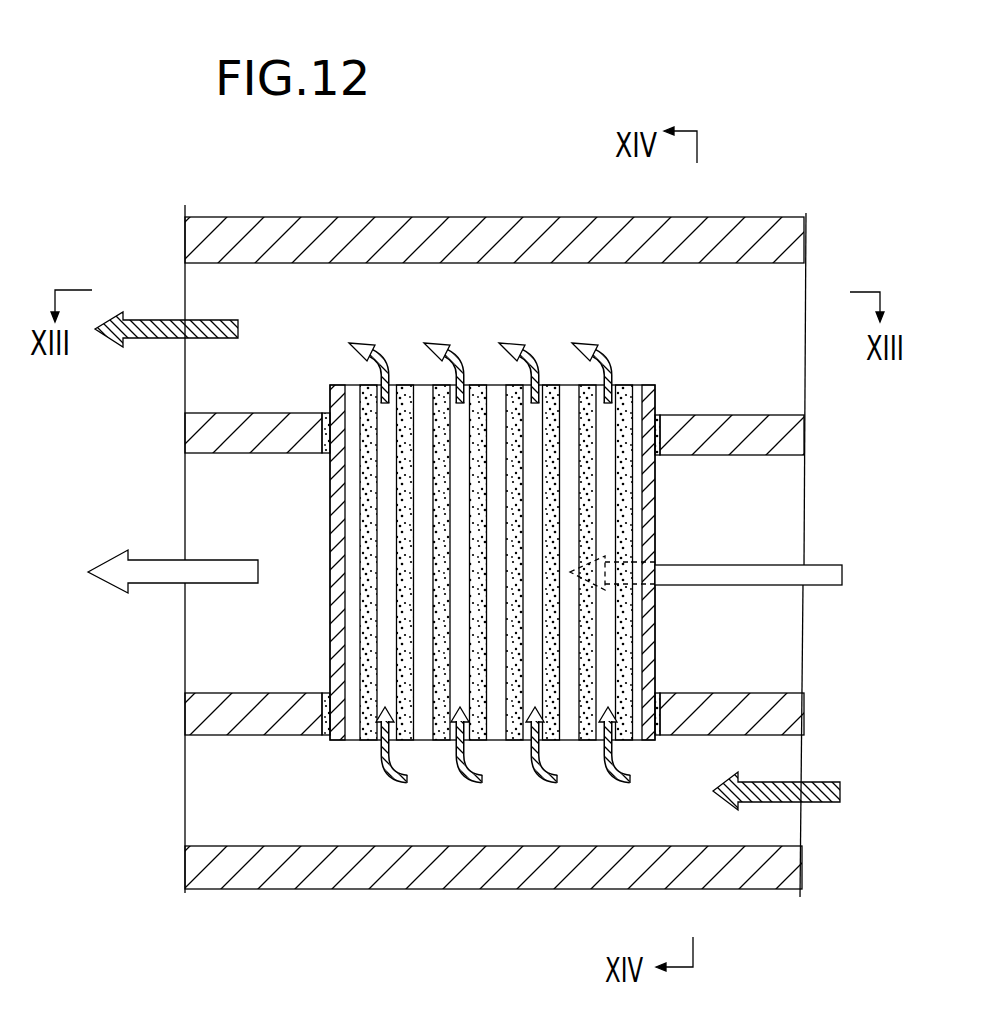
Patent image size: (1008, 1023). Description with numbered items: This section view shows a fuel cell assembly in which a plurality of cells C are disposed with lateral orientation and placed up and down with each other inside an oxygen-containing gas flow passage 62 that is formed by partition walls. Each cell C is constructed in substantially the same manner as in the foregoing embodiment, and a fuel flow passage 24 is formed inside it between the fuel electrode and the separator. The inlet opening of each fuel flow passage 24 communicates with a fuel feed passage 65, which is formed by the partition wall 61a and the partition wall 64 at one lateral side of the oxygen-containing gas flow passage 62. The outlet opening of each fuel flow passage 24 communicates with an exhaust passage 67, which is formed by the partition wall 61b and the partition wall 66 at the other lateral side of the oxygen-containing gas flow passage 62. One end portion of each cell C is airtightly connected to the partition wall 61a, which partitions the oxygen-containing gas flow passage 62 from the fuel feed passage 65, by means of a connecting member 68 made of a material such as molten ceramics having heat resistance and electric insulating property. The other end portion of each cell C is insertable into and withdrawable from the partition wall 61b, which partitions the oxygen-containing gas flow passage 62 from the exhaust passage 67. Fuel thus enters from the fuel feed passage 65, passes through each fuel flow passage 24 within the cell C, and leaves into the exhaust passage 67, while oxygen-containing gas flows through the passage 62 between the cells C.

The fuel flow passage 24 is at (496, 402).
The partition wall 61a is at (706, 693).
The partition wall 61b is at (705, 413).
The oxygen-containing gas flow passage 62 is at (835, 565).
The partition wall 64 is at (550, 889).
The fuel feed passage 65 is at (503, 771).
The partition wall 66 is at (553, 217).
The exhaust passage 67 is at (485, 341).
The connecting member 68 is at (328, 690).
The cell C is at (530, 564).